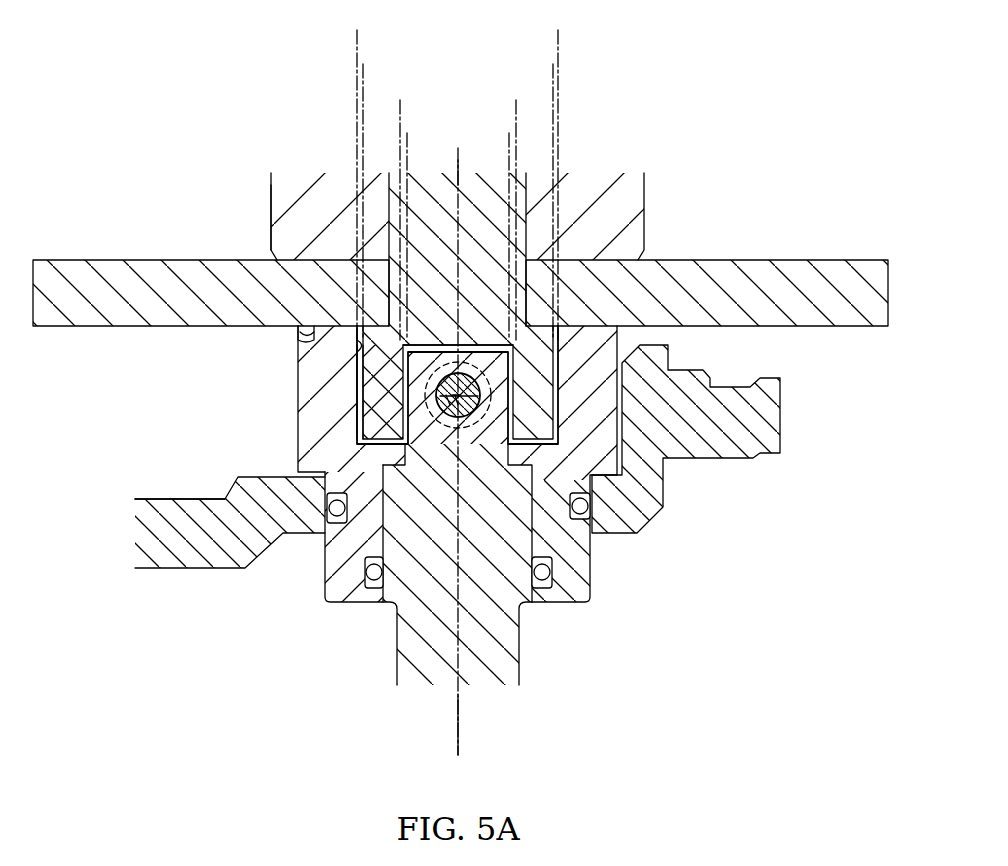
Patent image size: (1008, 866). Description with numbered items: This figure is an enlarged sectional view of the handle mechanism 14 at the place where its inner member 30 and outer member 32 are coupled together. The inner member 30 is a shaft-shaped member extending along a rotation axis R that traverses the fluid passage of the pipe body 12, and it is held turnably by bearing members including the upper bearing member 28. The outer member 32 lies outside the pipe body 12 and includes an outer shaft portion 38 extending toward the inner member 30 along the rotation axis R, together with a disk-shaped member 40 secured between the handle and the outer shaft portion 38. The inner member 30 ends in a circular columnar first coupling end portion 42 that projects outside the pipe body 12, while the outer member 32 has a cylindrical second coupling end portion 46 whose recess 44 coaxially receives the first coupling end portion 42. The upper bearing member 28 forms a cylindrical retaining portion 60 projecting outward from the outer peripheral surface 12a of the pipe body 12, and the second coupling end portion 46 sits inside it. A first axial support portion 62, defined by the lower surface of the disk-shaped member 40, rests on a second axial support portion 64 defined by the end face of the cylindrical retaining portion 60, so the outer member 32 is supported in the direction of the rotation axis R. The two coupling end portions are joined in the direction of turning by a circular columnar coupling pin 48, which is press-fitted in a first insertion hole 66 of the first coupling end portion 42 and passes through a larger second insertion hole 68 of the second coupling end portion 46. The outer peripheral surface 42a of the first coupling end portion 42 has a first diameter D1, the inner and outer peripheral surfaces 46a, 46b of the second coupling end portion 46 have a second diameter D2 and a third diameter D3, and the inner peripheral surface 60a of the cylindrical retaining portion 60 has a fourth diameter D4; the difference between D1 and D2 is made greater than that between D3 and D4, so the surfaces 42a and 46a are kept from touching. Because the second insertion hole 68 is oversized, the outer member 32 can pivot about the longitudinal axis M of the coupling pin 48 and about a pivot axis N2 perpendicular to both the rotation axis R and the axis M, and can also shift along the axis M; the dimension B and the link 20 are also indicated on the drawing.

The handle mechanism 14 is at (300, 172).
The outer member 32 is at (270, 200).
The outer shaft portion 38 is at (443, 266).
The disk-shaped member 40 is at (100, 283).
The first axial support portion 62 is at (297, 338).
The second axial support portion 64 is at (333, 322).
The cylindrical retaining portion 60 is at (320, 360).
The inner peripheral surface 60a is at (367, 349).
The second coupling end portion 46 is at (405, 400).
The inner peripheral surface 46a is at (373, 408).
The outer peripheral surface 46b is at (367, 372).
The first coupling end portion 42 is at (360, 440).
The outer peripheral surface 42a is at (395, 425).
The pipe body 12 is at (150, 517).
The link 20 is at (230, 522).
The outer peripheral surface 12a is at (181, 499).
The upper bearing member 28 is at (347, 548).
The inner member 30 is at (387, 595).
The recess 44 is at (617, 488).
The coupling pin 48 is at (592, 537).
The first insertion hole 66 is at (470, 412).
The second insertion hole 68 is at (482, 420).
The first diameter D1 is at (407, 141).
The second diameter D2 is at (400, 108).
The third diameter D3 is at (363, 73).
The fourth diameter D4 is at (357, 39).
The dimension B is at (458, 173).
The rotation axis R is at (457, 727).
The pivot axis N2 is at (445, 405).
The longitudinal axis M is at (457, 405).